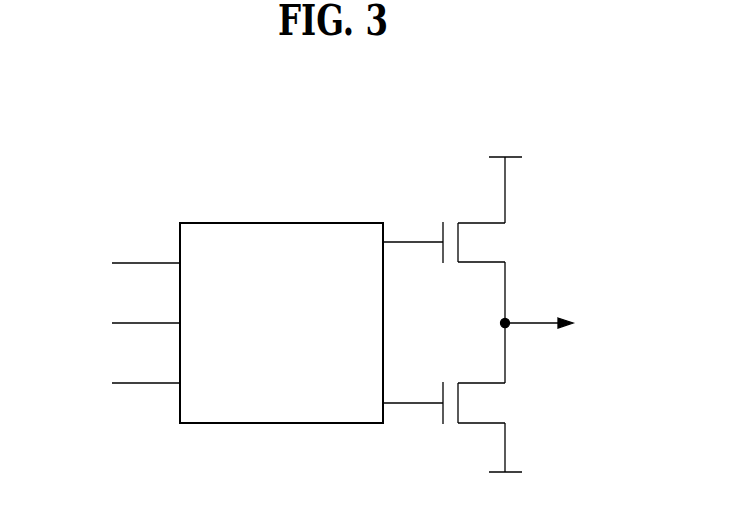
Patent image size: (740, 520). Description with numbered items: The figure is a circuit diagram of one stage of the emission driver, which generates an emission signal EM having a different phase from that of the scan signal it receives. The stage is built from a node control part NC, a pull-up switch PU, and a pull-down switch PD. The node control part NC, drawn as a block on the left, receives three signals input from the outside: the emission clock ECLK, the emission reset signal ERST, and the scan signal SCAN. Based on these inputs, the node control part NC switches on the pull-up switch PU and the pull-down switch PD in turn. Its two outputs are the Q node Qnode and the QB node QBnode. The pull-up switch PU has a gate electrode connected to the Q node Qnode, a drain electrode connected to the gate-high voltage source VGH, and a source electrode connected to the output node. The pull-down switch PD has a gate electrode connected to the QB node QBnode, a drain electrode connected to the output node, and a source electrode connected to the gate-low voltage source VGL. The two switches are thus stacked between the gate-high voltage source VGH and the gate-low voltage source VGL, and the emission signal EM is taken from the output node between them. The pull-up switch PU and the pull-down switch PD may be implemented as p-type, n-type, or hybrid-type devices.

The node control part NC is at (283, 424).
The emission clock ECLK is at (119, 264).
The emission reset signal ERST is at (119, 324).
The scan signal SCAN is at (119, 384).
The Q node Qnode is at (379, 242).
The QB node QBnode is at (372, 403).
The pull-up switch PU is at (488, 242).
The pull-down switch PD is at (488, 403).
The gate-high voltage source VGH is at (504, 178).
The gate-low voltage source VGL is at (504, 464).
The emission signal EM is at (556, 322).